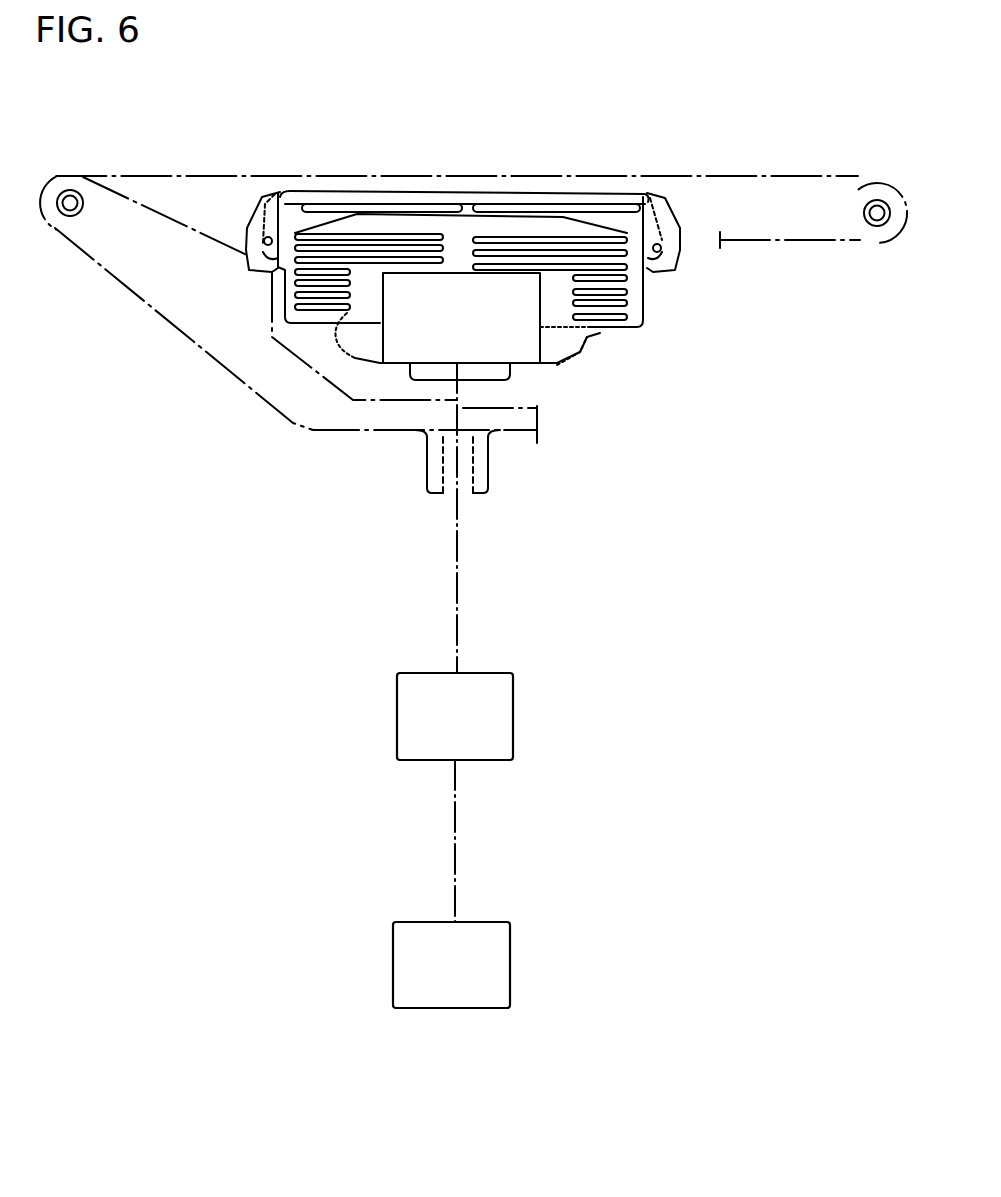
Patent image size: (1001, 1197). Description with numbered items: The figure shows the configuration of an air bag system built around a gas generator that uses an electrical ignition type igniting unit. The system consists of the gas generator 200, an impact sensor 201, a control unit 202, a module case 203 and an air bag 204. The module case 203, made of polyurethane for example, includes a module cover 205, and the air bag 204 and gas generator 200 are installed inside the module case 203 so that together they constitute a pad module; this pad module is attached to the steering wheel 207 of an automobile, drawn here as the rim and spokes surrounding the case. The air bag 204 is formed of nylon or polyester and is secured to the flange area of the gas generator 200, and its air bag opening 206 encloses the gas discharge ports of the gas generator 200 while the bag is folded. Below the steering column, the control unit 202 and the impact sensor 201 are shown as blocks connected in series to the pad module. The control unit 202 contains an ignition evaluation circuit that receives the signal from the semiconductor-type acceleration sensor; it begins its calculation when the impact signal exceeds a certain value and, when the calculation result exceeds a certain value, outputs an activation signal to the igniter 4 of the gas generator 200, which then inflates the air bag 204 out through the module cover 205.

The steering wheel 207 is at (750, 178).
The module case 203 is at (617, 190).
The module cover 205 is at (458, 192).
The air bag 204 is at (330, 210).
The air bag opening 206 is at (623, 293).
The gas generator 200 is at (383, 343).
The igniter 4 is at (447, 373).
The control unit 202 is at (397, 710).
The impact sensor 201 is at (393, 965).